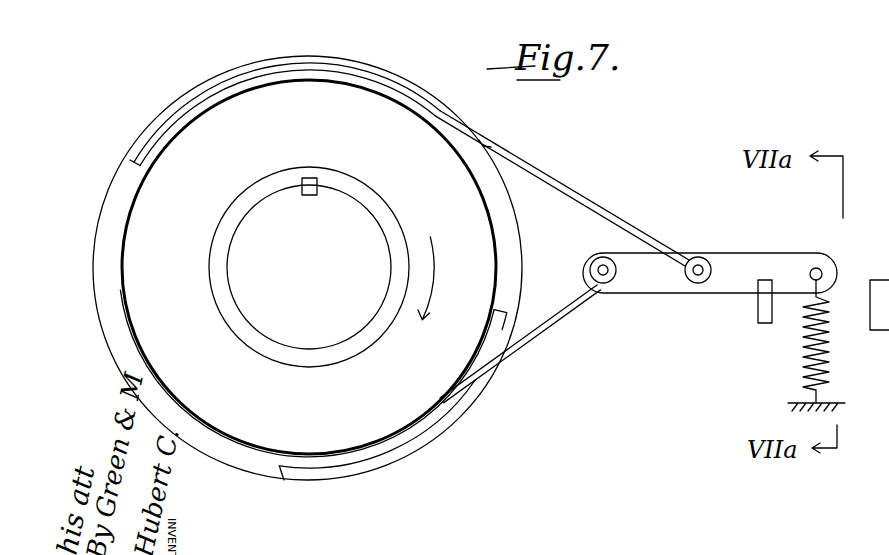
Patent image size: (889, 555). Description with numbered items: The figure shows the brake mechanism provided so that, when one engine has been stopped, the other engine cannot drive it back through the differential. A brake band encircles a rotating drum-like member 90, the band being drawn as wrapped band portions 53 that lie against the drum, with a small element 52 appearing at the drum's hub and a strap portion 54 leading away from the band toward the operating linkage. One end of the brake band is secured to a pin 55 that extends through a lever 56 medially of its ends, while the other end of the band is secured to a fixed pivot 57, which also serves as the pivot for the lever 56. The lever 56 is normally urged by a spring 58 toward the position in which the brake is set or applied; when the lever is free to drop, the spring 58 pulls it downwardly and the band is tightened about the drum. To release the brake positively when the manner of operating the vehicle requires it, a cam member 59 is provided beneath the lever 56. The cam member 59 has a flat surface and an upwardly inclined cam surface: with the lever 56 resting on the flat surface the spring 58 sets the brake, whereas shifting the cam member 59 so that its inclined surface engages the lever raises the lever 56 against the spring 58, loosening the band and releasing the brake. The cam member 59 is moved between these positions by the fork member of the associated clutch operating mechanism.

The drum 90 is at (302, 254).
The pin on drum hub 52 is at (316, 184).
The brake band 53 is at (272, 471).
The strap 54 is at (548, 170).
The pin 55 is at (698, 284).
The lever 56 is at (735, 256).
The fixed pivot 57 is at (604, 284).
The spring 58 is at (827, 366).
The cam member 59 is at (763, 318).